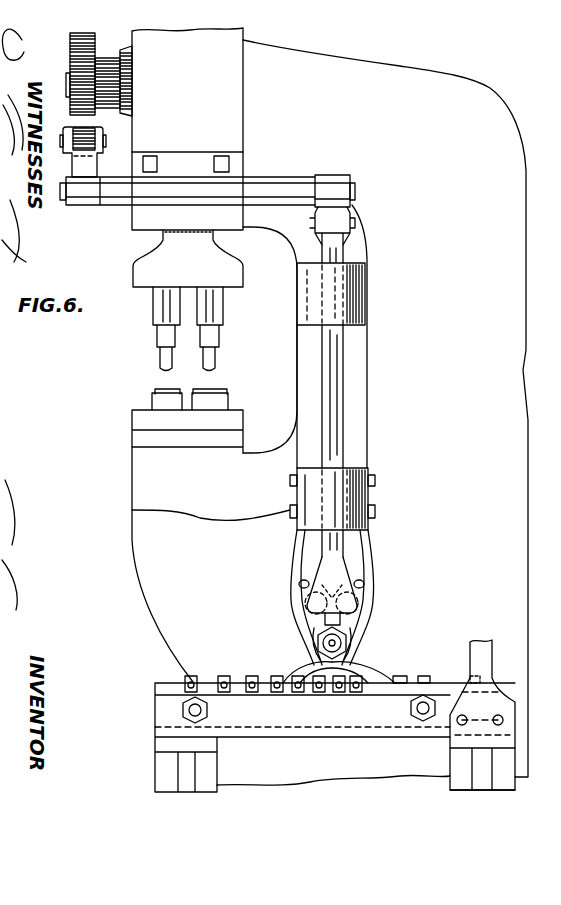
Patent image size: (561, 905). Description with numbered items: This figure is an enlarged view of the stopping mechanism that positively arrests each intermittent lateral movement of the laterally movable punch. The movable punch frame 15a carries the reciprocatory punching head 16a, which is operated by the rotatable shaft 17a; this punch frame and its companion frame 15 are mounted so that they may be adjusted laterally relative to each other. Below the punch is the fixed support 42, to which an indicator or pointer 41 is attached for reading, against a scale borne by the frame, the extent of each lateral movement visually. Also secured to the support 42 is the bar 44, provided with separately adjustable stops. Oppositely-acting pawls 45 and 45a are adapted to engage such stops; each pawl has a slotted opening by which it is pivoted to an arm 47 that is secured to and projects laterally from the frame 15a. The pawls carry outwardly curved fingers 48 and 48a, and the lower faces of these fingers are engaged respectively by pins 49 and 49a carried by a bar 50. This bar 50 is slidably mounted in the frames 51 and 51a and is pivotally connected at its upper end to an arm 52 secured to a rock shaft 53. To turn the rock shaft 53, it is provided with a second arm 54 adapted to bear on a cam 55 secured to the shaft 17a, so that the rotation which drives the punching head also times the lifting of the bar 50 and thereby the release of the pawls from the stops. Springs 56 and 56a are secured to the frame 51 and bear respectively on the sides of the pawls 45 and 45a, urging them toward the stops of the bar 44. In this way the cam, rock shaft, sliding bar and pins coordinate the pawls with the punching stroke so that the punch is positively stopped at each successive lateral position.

The frame 15 is at (402, 408).
The frame 15a is at (232, 86).
The reciprocatory punching head 16a is at (240, 280).
The rotatable shaft 17a is at (66, 85).
The indicator or pointer 41 is at (492, 660).
The fixed support 42 is at (505, 760).
The bar 44 is at (243, 681).
The pawl 45 is at (288, 668).
The pawl 45a is at (378, 672).
The arm 47 is at (348, 627).
The outwardly curved finger 48 is at (300, 585).
The outwardly curved finger 48a is at (360, 585).
The pin 49 is at (305, 605).
The pin 49a is at (360, 603).
The bar 50 is at (343, 394).
The frame 51 is at (345, 476).
The frame 51a is at (357, 300).
The arm 52 is at (352, 212).
The rock shaft 53 is at (290, 185).
The second arm 54 is at (70, 165).
The cam 55 is at (70, 52).
The spring 56 is at (372, 548).
The spring 56a is at (292, 555).